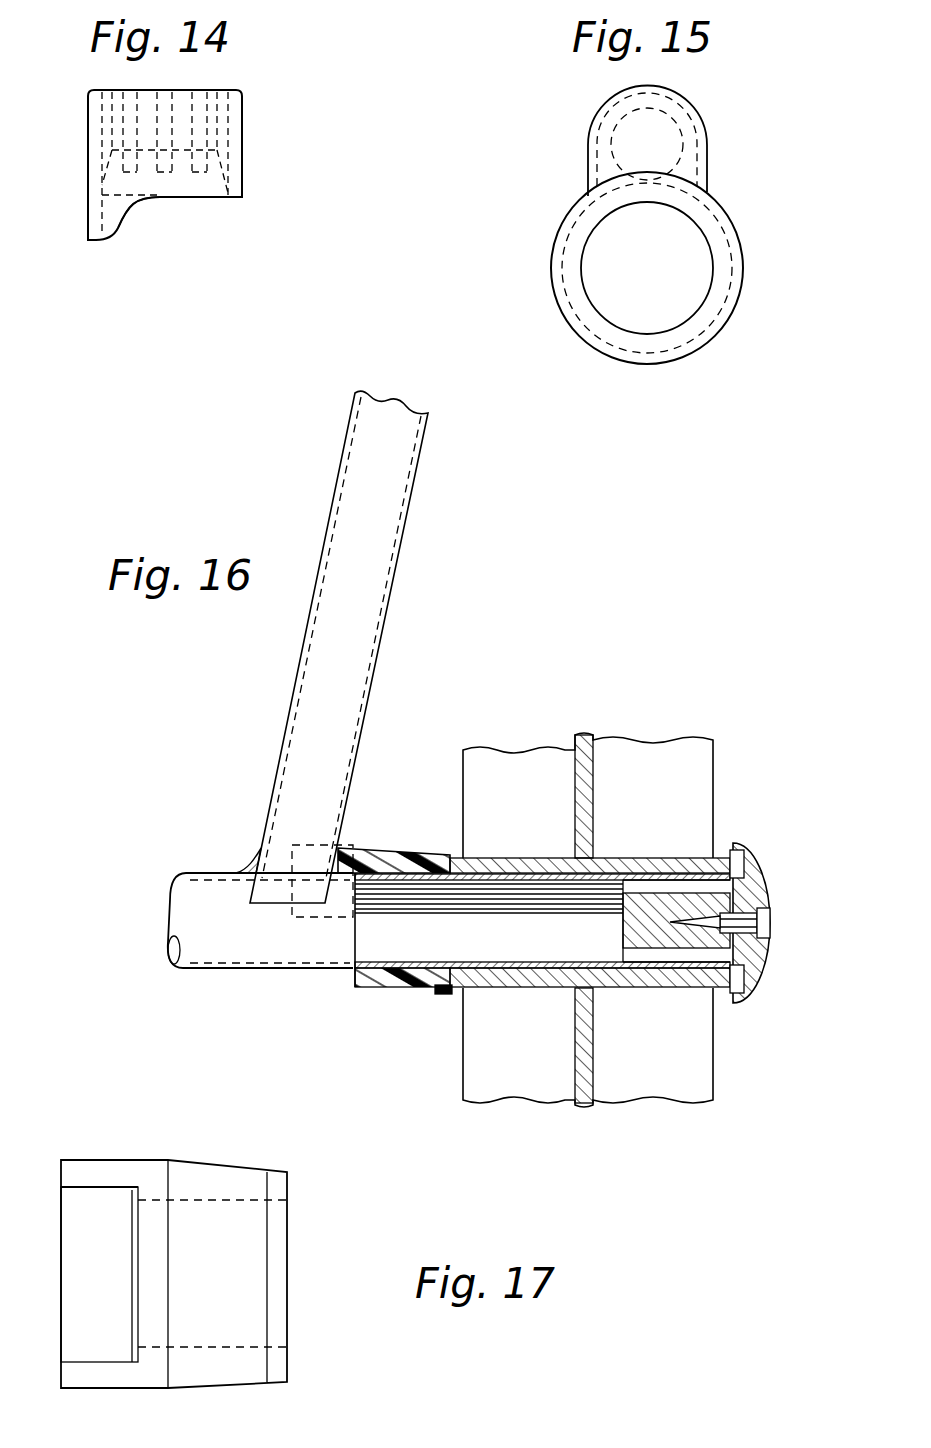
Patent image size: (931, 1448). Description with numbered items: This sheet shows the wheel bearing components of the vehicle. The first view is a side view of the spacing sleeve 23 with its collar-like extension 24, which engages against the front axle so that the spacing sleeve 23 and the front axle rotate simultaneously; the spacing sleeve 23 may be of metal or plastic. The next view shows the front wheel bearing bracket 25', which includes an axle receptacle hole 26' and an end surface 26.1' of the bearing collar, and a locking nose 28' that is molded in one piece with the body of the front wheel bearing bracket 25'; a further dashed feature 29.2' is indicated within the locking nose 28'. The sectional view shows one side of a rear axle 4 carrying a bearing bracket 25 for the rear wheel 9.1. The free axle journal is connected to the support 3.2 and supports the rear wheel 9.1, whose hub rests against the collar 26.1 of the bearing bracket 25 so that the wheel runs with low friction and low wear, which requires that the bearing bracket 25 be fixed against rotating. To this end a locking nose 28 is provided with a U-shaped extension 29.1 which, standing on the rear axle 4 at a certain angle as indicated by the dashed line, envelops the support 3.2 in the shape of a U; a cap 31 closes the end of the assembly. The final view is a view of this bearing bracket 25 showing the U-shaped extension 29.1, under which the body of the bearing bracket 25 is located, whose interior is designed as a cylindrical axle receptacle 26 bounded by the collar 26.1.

In FIG. 14, the spacing sleeve 23 is at (242, 150).
In FIG. 14, the collar-like extension 24 is at (128, 218).
In FIG. 15, the locking nose 28' is at (607, 136).
In FIG. 15, the recess 29.2' is at (575, 144).
In FIG. 15, the front wheel bearing bracket 25' is at (603, 268).
In FIG. 15, the axle receptacle hole 26' is at (647, 268).
In FIG. 15, the end surface of the bearing collar 26.1' is at (607, 268).
In FIG. 16, the support 3.2 is at (367, 657).
In FIG. 16, the rear wheel 9.1 is at (673, 810).
In FIG. 16, the rear axle 4 is at (248, 953).
In FIG. 16, the U-shaped extension 29.1 is at (313, 853).
In FIG. 17, the U-shaped extension 29.1 is at (127, 1289).
In FIG. 16, the locking nose 28 is at (395, 885).
In FIG. 17, the locking nose 28 is at (99, 1129).
In FIG. 16, the bearing bracket 25 is at (542, 968).
In FIG. 17, the bearing bracket 25 is at (174, 1230).
In FIG. 16, the cap 31 is at (765, 872).
In FIG. 17, the axle receptacle 26 is at (325, 1277).
In FIG. 17, the collar 26.1 is at (266, 1276).